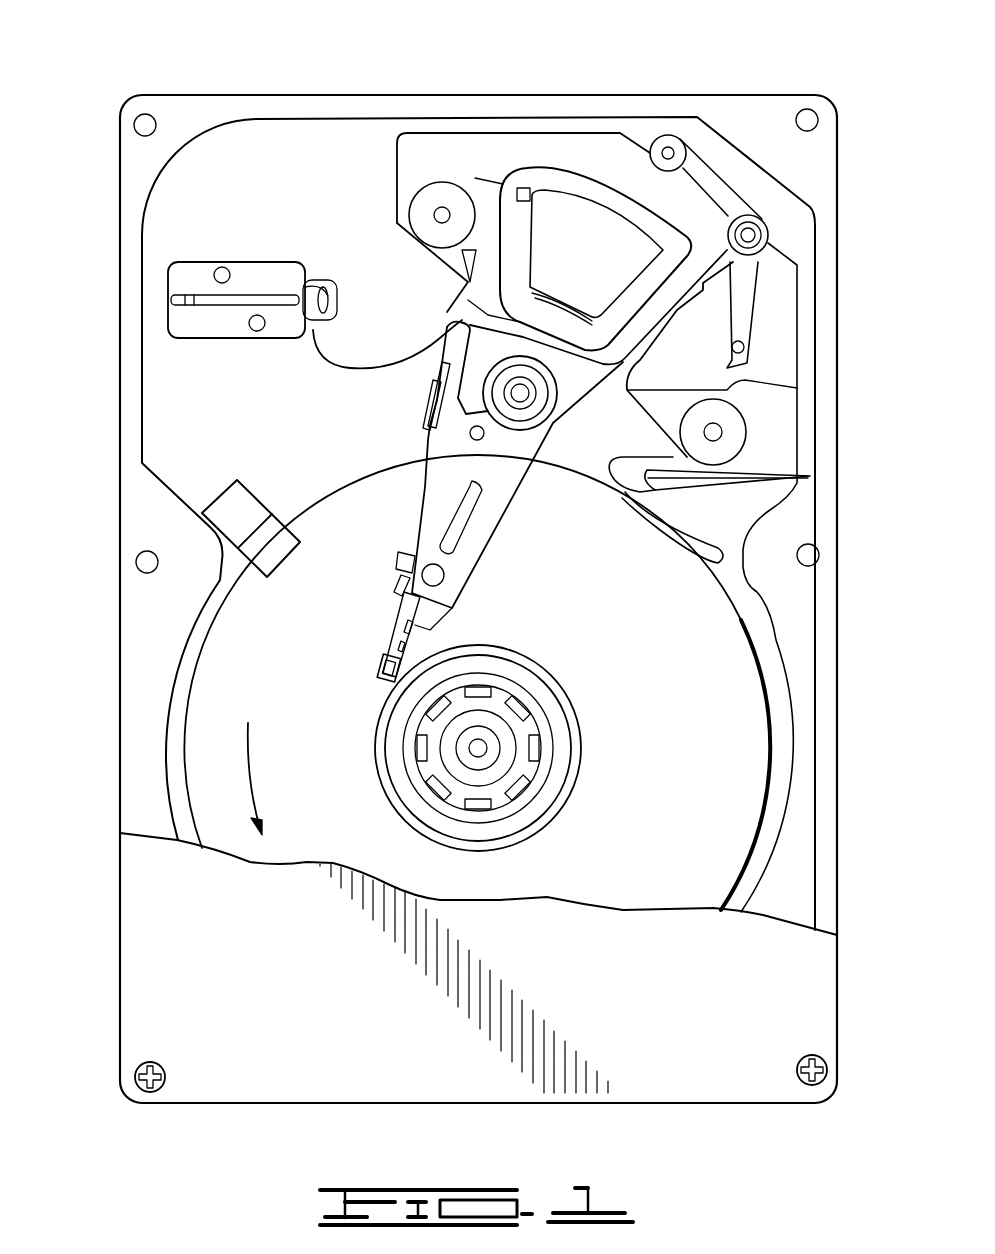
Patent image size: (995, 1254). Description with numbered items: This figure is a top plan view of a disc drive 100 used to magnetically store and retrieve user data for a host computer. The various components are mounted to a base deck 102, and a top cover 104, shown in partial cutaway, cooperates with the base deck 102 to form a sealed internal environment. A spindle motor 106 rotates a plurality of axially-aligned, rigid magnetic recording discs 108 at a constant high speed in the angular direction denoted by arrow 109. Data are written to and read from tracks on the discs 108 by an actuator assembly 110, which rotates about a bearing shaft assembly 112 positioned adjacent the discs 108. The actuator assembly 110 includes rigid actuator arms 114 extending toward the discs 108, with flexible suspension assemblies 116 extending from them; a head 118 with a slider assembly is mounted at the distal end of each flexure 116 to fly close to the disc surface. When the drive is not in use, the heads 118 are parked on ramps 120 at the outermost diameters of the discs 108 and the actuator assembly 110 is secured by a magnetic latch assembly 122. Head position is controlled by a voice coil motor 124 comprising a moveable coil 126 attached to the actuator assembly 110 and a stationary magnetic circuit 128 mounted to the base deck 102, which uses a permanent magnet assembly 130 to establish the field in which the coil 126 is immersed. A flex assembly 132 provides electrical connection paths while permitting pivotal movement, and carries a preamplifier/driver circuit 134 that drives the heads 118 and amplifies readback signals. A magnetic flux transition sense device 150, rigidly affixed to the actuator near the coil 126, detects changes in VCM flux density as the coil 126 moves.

The disc drive 100 is at (222, 55).
The base deck 102 is at (175, 415).
The top cover 104 is at (173, 908).
The spindle motor 106 is at (506, 741).
The magnetic recording discs 108 is at (745, 765).
The arrow 109 is at (248, 770).
The actuator assembly 110 is at (498, 466).
The bearing shaft assembly 112 is at (522, 398).
The actuator arms 114 is at (455, 565).
The flexible suspension assemblies 116 is at (400, 628).
The head 118 is at (378, 666).
The ramps 120 is at (233, 497).
The magnetic latch assembly 122 is at (752, 285).
The voice coil motor 124 is at (555, 187).
The coil 126 is at (525, 265).
The magnetic circuit 128 is at (770, 432).
The permanent magnet assembly 130 is at (710, 372).
The flex assembly 132 is at (358, 362).
The preamplifier/driver circuit 134 is at (430, 380).
The magnetic flux transition sense device 150 is at (521, 187).